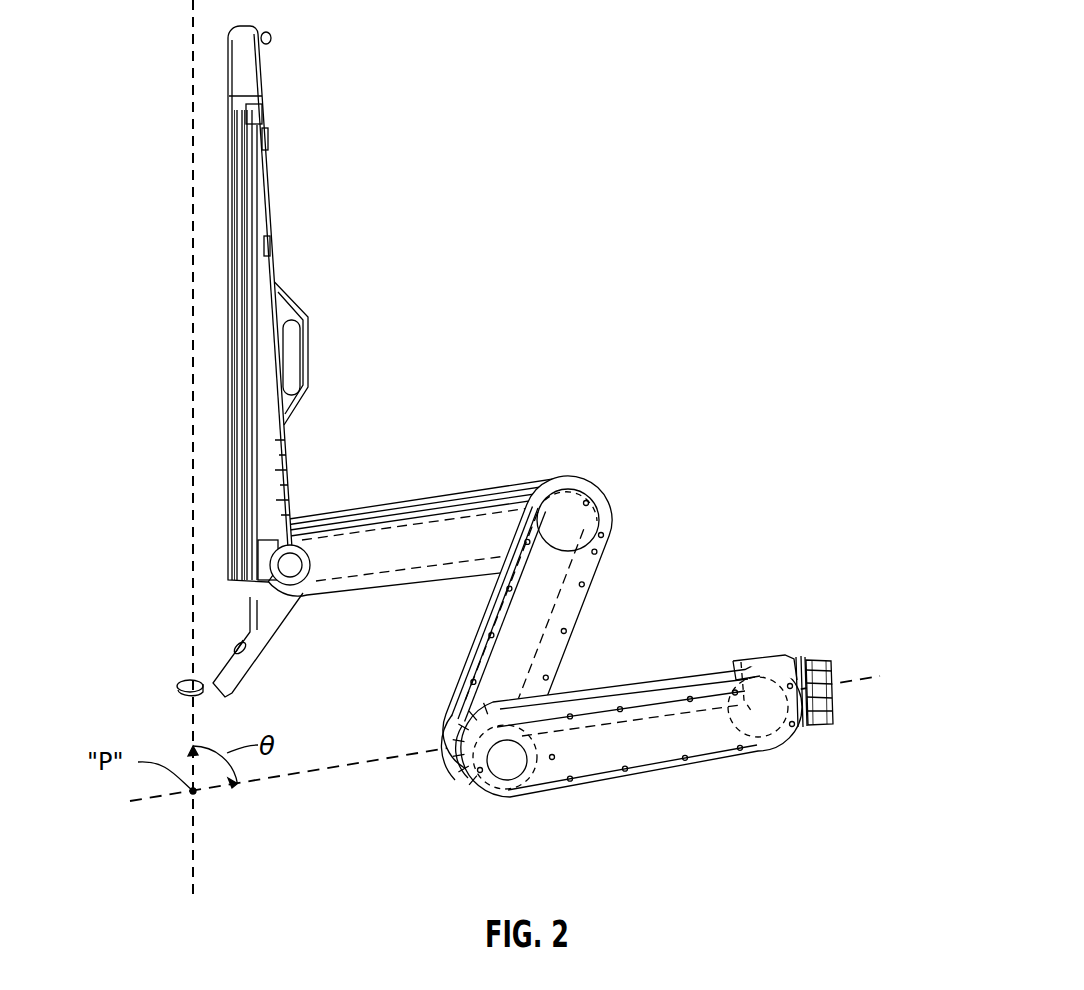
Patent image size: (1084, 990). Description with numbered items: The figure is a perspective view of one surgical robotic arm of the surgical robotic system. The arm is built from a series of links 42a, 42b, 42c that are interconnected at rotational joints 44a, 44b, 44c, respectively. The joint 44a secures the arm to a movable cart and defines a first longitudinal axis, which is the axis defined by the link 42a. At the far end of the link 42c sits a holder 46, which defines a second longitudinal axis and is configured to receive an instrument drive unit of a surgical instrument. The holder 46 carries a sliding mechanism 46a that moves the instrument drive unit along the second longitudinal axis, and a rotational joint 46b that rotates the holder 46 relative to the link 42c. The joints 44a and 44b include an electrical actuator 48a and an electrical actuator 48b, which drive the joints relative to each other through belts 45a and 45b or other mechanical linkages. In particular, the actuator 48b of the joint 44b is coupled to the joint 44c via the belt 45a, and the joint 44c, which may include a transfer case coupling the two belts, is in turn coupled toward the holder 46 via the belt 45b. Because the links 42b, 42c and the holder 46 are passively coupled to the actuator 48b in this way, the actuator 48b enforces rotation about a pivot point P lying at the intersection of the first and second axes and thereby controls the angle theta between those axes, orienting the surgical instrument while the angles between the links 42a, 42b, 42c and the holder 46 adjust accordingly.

The holder 46 is at (258, 83).
The sliding mechanism 46a is at (233, 227).
The rotational joint 46b is at (288, 552).
The link 42a is at (652, 750).
The link 42b is at (537, 657).
The link 42c is at (378, 508).
The rotational joint 44a is at (823, 717).
The rotational joint 44b is at (507, 777).
The rotational joint 44c is at (585, 528).
The belt 45a is at (580, 577).
The belt 45b is at (493, 508).
The electrical actuator 48a is at (810, 655).
The electrical actuator 48b is at (475, 762).